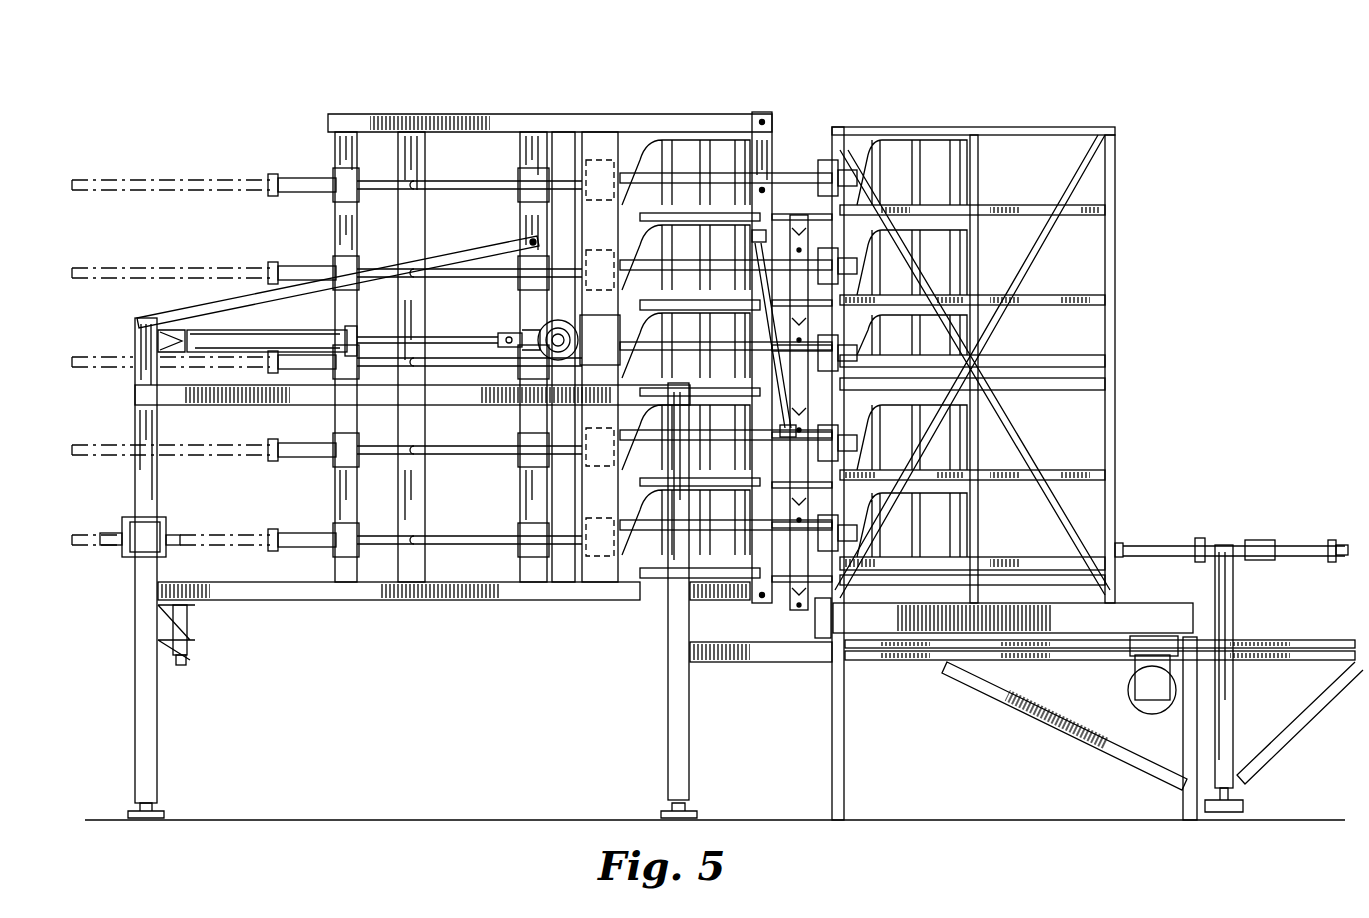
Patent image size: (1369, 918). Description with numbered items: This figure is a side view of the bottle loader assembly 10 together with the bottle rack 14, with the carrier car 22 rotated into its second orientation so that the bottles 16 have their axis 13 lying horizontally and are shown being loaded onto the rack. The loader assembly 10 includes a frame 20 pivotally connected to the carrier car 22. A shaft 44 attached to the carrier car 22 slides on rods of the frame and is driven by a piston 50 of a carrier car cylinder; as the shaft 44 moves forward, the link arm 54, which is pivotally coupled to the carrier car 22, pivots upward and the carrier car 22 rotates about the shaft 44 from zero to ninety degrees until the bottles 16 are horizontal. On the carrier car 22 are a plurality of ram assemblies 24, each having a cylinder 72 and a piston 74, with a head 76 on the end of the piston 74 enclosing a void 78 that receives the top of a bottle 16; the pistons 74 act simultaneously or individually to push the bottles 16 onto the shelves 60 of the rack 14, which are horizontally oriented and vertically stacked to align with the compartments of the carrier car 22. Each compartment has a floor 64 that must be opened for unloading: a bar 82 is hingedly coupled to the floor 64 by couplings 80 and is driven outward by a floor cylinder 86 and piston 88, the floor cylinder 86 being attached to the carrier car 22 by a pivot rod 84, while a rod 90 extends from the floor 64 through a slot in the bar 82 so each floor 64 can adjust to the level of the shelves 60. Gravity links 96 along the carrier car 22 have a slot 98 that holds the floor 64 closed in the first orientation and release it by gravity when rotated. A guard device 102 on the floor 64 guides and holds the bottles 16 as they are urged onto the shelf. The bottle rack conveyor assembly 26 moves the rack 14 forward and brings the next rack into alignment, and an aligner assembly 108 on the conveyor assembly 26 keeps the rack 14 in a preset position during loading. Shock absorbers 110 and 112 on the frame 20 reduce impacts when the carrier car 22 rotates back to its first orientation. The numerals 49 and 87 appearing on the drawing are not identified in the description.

The bottle loader assembly 10 is at (351, 78).
The axis 13 is at (697, 354).
The bottle rack 14 is at (1003, 459).
The bottles 16 is at (722, 128).
The frame 20 is at (132, 348).
The carrier car 22 is at (640, 110).
The ram assembly 24 is at (292, 172).
The bottle rack conveyor assembly 26 is at (1125, 600).
The shaft 44 is at (533, 328).
The hydraulic cylinder 49 is at (218, 326).
The piston 50 is at (458, 308).
The link arm 54 is at (242, 300).
The shelves 60 is at (1049, 180).
The floor 64 is at (783, 585).
The cylinder 72 is at (315, 180).
The piston 74 is at (218, 183).
The head 76 is at (606, 172).
The void 78 is at (623, 172).
The couplings 80 is at (790, 520).
The bar 82 is at (800, 605).
The pivot rod 84 is at (752, 233).
The floor cylinder 86 is at (738, 303).
The top shelf 87 is at (718, 205).
The piston 88 is at (773, 369).
The rod 90 is at (842, 572).
The gravity links 96 is at (772, 520).
The slot 98 is at (773, 538).
The guard device 102 is at (643, 606).
The aligner assembly 108 is at (1232, 520).
The shock absorber 110 is at (124, 538).
The shock absorber 112 is at (192, 645).